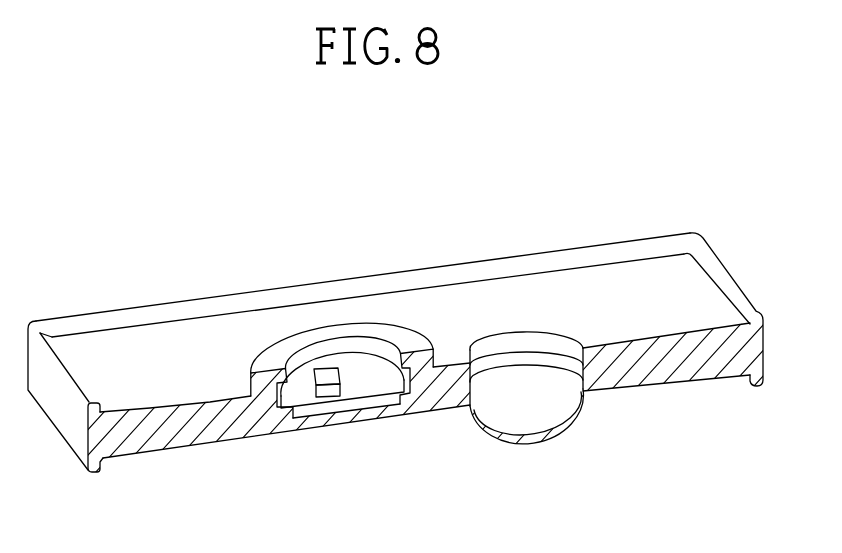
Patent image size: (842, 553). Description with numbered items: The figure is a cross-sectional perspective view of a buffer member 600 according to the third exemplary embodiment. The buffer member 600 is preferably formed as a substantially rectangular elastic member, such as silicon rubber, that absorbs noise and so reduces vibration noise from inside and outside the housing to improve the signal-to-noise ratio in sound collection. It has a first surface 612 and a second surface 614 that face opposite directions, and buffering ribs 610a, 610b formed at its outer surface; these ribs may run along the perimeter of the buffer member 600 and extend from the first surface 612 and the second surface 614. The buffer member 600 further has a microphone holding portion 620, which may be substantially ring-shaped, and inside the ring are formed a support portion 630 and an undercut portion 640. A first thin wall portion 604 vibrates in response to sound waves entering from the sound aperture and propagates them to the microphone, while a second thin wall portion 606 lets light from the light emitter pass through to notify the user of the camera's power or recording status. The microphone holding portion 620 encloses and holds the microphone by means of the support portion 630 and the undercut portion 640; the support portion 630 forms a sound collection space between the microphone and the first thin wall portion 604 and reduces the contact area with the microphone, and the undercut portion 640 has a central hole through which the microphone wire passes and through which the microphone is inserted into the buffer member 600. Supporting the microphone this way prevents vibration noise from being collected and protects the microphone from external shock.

The buffer member 600 is at (421, 337).
The first thin wall portion 604 is at (313, 422).
The second thin wall portion 606 is at (533, 434).
The buffering rib 610a is at (90, 475).
The buffering rib 610b is at (160, 304).
The first surface 612 is at (677, 381).
The second surface 614 is at (645, 303).
The microphone holding portion 620 is at (262, 355).
The support portion 630 is at (345, 380).
The undercut portion 640 is at (369, 399).